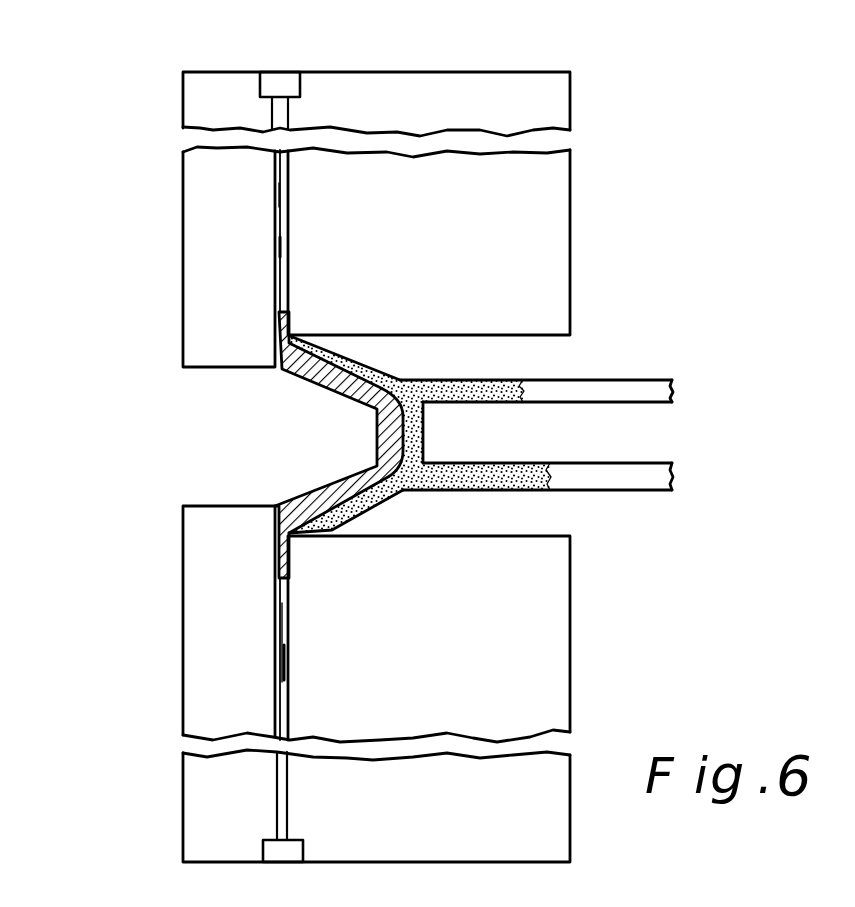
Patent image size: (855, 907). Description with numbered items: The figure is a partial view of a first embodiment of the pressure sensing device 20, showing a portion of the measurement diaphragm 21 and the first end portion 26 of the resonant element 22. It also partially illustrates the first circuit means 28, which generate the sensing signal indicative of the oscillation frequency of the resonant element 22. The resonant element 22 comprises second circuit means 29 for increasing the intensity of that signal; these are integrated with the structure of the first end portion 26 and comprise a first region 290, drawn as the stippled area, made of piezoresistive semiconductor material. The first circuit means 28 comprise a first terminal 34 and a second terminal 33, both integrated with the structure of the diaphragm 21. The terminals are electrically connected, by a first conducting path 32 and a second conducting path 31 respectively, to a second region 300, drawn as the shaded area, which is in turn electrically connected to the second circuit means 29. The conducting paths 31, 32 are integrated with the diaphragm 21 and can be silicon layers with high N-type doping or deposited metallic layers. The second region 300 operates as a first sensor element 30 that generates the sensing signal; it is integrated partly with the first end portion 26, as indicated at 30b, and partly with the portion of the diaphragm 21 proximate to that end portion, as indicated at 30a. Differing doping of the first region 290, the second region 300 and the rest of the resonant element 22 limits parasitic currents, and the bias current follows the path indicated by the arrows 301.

The pressure sensing device 20 is at (602, 177).
The measurement diaphragm 21 is at (543, 123).
The resonant element 22 is at (660, 463).
The first end portion 26 is at (483, 367).
The first circuit means 28 is at (128, 448).
The second circuit means 29 is at (452, 438).
The first sensor element 30 is at (235, 458).
The second region portion integrated with diaphragm 30a is at (267, 533).
The second region portion integrated with end portion 30b is at (343, 407).
The second conducting path 31 is at (297, 673).
The first conducting path 32 is at (293, 120).
The second terminal 33 is at (308, 853).
The first terminal 34 is at (300, 88).
The first region 290 is at (412, 395).
The second region 300 is at (297, 365).
The arrows indicating bias current path 301 is at (283, 207).